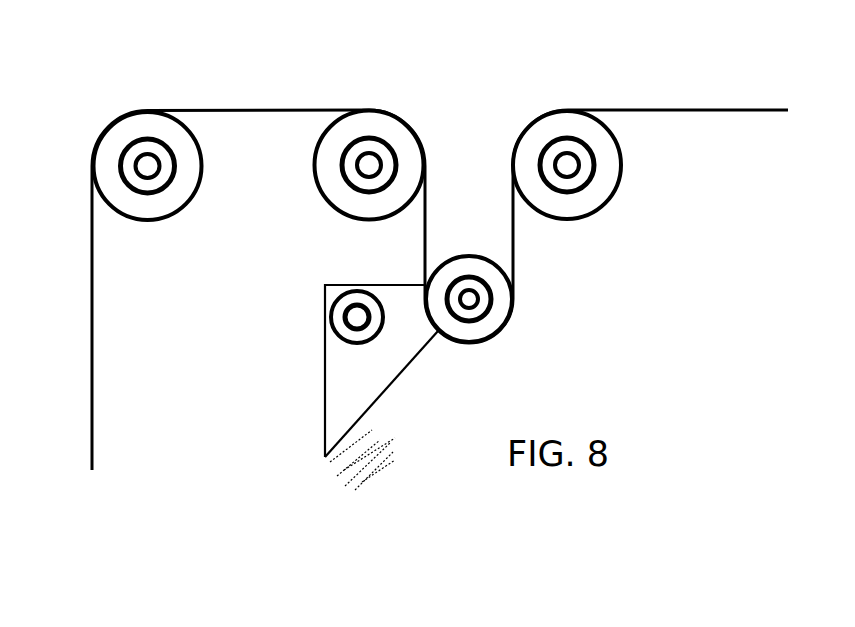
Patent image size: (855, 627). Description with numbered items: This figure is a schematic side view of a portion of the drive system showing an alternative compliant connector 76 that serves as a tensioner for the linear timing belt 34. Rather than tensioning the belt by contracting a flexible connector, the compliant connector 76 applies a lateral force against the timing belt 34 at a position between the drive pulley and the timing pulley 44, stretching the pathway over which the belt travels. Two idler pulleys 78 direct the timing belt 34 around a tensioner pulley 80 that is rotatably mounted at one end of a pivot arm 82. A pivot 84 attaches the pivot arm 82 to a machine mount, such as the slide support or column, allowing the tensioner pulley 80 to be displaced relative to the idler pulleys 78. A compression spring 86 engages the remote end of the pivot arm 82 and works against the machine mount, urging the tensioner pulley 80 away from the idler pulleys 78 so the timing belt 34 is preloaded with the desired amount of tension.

The linear timing belt 34 is at (92, 425).
The timing pulley 44 is at (120, 112).
The compliant connector 76 is at (437, 97).
The idler pulleys 78 is at (322, 191).
The tensioner pulley 80 is at (508, 325).
The pivot arm 82 is at (340, 367).
The pivot 84 is at (340, 312).
The compression spring 86 is at (335, 468).